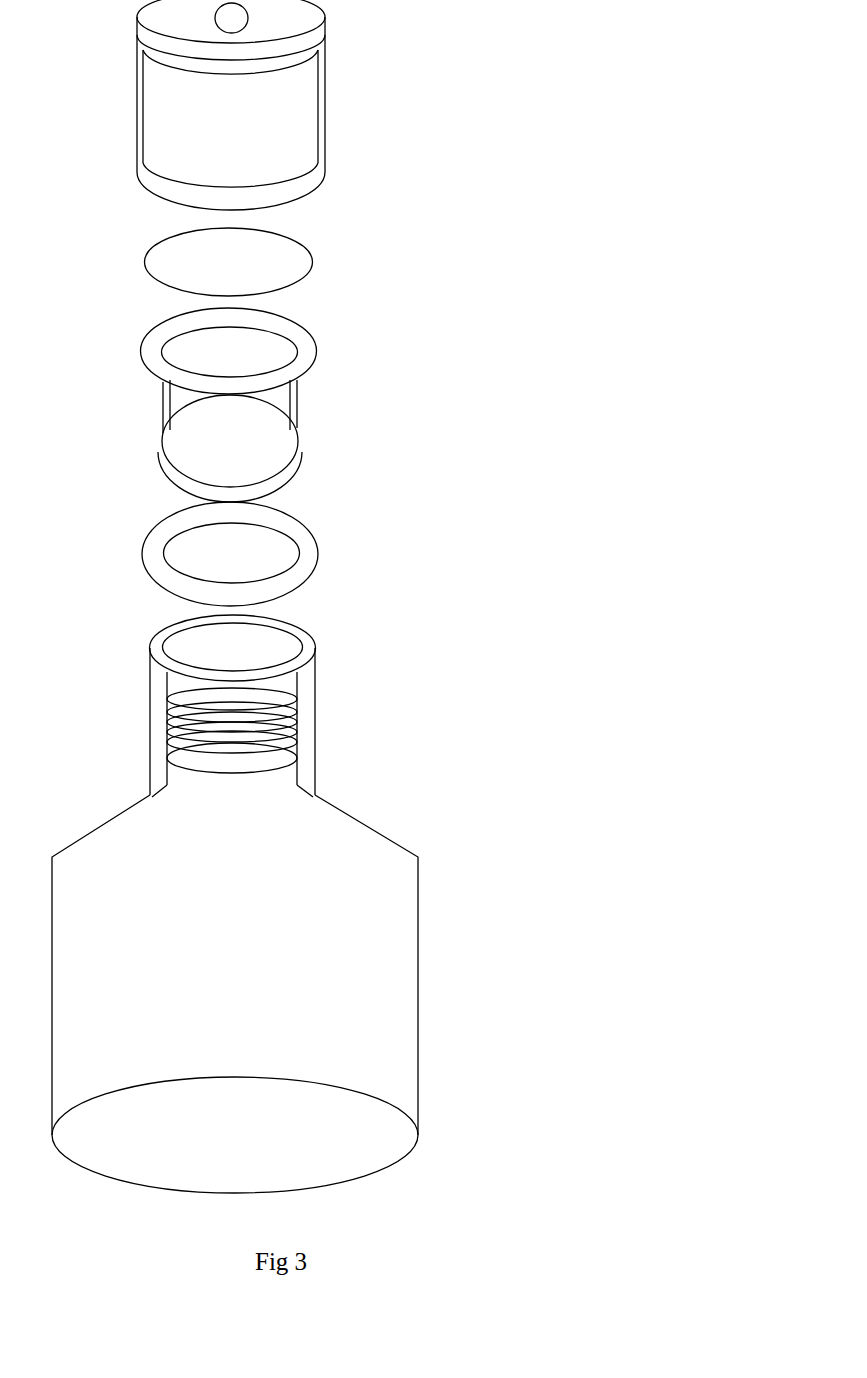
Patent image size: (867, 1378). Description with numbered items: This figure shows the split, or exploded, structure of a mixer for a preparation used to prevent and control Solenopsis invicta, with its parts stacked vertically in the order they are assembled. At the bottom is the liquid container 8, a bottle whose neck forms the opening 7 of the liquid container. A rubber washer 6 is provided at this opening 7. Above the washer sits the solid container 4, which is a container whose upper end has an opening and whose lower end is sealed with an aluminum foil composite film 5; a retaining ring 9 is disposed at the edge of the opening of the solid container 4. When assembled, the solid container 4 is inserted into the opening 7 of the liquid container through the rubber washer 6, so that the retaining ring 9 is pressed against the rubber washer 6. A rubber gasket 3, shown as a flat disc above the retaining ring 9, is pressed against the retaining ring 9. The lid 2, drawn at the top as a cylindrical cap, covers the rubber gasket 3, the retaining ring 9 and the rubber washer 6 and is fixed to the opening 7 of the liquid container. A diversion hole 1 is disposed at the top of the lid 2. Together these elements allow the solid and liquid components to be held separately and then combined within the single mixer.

The diversion hole 1 is at (232, 18).
The lid 2 is at (292, 118).
The rubber gasket 3 is at (270, 247).
The solid container 4 is at (164, 413).
The aluminum foil composite film 5 is at (267, 440).
The rubber washer 6 is at (305, 560).
The opening of the liquid container 7 is at (302, 650).
The liquid container 8 is at (383, 937).
The retaining ring 9 is at (305, 348).